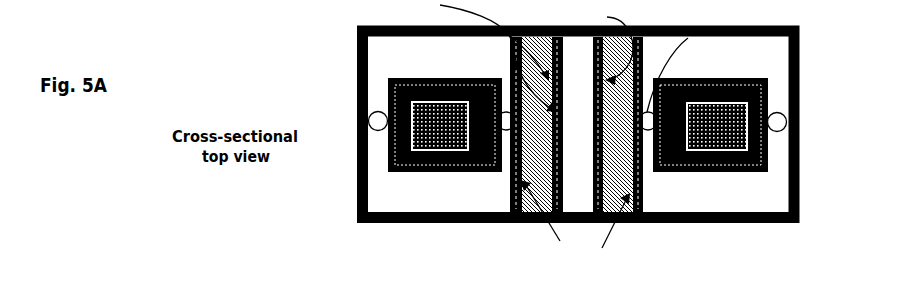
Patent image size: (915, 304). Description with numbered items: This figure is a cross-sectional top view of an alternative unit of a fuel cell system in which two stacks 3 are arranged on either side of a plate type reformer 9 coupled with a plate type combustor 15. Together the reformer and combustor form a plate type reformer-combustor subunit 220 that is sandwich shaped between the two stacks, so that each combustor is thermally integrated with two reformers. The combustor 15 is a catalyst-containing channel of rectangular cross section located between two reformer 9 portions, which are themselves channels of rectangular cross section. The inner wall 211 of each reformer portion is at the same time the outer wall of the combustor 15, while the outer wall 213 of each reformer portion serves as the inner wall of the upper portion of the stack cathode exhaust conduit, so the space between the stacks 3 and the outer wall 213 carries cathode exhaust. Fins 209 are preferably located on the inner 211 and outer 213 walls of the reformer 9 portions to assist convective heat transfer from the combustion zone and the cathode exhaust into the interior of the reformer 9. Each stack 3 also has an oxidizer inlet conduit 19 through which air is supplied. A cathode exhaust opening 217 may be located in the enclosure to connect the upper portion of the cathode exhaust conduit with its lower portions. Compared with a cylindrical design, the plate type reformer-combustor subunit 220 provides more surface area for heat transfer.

The stack 3 is at (453, 147).
The reformer 9 is at (545, 132).
The combustor 15 is at (588, 133).
The oxidizer inlet conduit 19 is at (777, 122).
The fins 209 is at (484, 56).
The inner wall 211 is at (600, 45).
The outer wall 213 is at (575, 219).
The cathode exhaust opening 217 is at (693, 58).
The plate type reformer-combustor subunit 220 is at (641, 198).